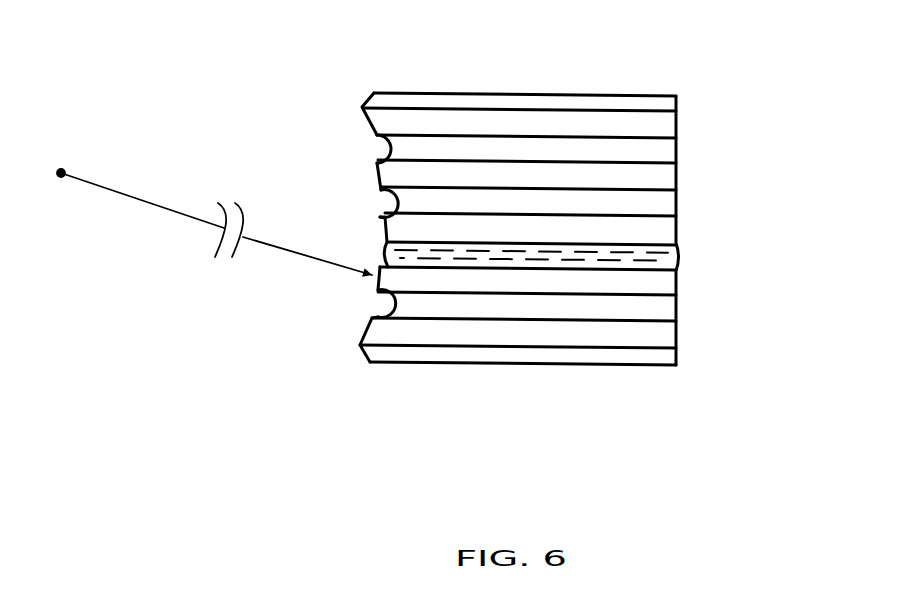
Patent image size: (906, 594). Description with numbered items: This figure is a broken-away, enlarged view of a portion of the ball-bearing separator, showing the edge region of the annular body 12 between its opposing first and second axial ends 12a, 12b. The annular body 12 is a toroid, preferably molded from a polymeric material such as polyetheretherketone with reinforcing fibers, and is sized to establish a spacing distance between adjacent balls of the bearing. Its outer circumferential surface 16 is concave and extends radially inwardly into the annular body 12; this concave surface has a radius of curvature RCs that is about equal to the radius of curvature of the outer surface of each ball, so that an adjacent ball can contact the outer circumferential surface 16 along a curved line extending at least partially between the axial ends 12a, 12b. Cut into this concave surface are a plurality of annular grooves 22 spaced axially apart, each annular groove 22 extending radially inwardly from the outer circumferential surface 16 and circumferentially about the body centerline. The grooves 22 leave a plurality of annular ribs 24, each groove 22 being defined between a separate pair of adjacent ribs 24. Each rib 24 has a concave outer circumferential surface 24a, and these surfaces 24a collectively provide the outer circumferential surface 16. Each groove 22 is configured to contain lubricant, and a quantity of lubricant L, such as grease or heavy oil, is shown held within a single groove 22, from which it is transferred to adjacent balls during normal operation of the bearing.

The annular body 12 is at (420, 373).
The first axial end 12a is at (487, 363).
The second axial end 12b is at (488, 95).
The outer circumferential surface 16 is at (363, 327).
The annular groove 22 is at (602, 150).
The annular rib 24 is at (538, 125).
The outer circumferential surface of rib 24a is at (362, 108).
The lubricant L is at (655, 252).
The radius of curvature of the concave outer circumferential surface RCs is at (128, 195).